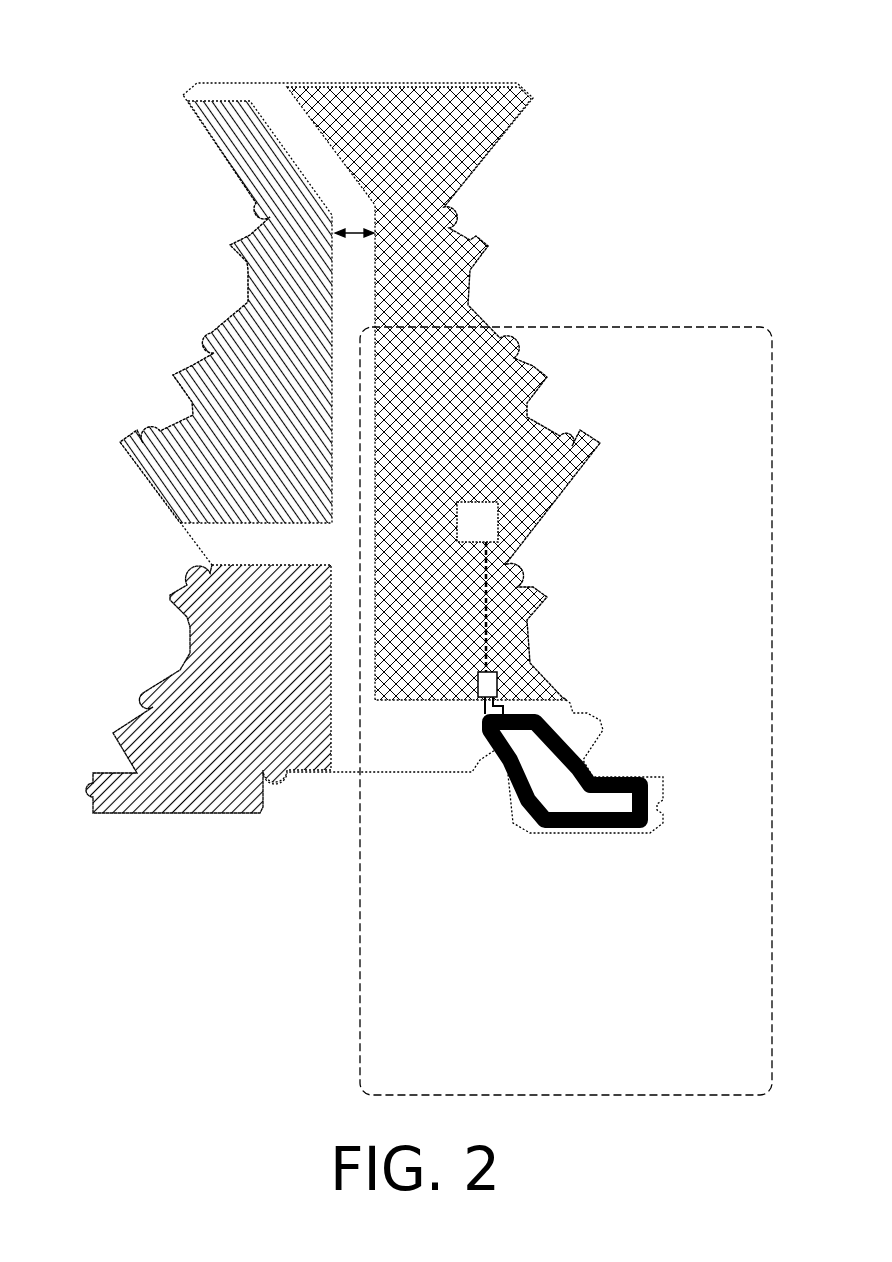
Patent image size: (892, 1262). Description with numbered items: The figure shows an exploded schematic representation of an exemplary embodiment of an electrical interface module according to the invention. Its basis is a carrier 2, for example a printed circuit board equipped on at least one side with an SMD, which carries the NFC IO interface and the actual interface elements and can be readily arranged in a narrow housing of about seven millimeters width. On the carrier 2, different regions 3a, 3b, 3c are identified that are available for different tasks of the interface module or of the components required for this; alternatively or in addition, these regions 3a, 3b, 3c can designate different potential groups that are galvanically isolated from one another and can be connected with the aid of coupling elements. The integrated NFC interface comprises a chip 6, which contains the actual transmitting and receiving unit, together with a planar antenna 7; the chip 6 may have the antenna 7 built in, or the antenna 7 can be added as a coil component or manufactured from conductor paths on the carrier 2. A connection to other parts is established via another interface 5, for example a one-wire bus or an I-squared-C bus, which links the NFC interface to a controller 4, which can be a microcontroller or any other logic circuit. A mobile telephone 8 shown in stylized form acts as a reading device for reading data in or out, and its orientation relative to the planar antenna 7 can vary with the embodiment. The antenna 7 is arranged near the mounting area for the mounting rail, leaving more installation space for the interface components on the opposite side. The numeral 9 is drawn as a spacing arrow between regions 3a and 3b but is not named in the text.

The carrier 2 is at (257, 83).
The region 3a is at (247, 322).
The region 3b is at (480, 83).
The region 3c is at (210, 682).
The controller 4 is at (478, 525).
The interface 5 is at (537, 596).
The chip 6 is at (497, 682).
The planar antenna 7 is at (580, 832).
The mobile telephone 8 is at (647, 327).
The gap 9 is at (357, 230).